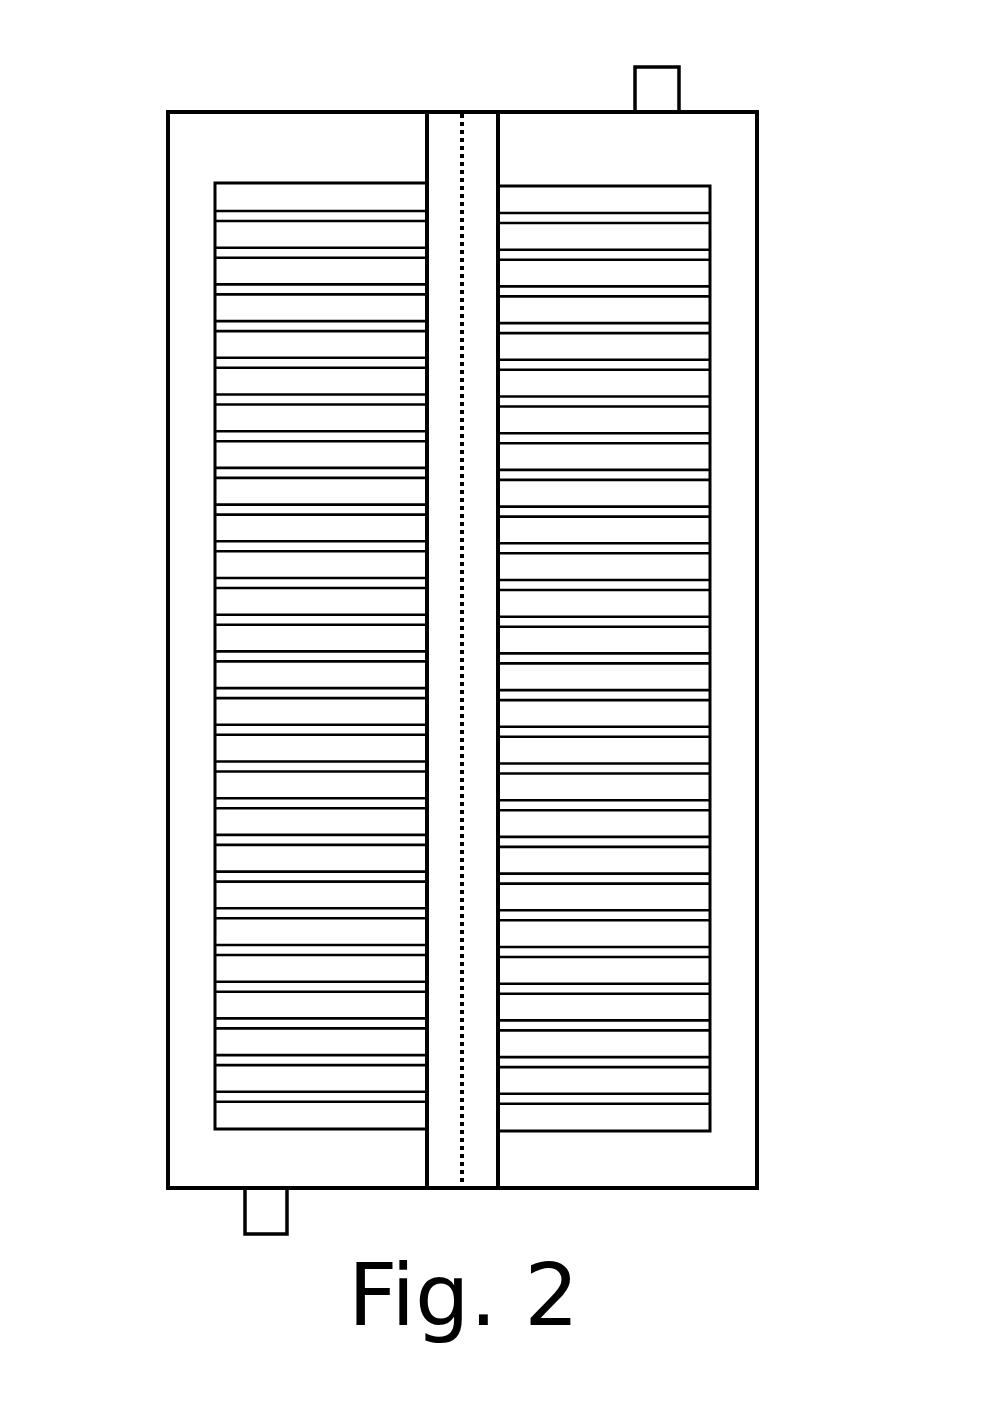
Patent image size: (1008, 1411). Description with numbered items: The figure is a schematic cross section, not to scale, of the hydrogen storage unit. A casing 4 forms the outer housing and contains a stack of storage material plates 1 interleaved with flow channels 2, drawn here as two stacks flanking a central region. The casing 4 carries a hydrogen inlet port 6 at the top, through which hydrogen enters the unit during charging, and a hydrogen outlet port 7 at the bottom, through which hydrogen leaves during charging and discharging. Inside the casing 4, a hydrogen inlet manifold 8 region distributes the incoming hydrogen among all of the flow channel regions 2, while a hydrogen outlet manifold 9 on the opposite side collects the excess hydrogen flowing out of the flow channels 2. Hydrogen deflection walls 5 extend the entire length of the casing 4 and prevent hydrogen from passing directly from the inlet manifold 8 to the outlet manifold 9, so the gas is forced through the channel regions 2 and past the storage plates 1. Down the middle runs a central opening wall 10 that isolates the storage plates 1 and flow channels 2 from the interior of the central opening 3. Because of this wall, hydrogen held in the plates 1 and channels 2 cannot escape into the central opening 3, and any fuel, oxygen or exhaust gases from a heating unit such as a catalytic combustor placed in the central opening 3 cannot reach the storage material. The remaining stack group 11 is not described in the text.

The storage material plates 1 is at (702, 202).
The flow channels 2 is at (702, 329).
The central opening 3 is at (438, 122).
The casing 4 is at (758, 467).
The hydrogen deflection walls 5 is at (464, 115).
The hydrogen inlet port 6 is at (672, 82).
The hydrogen outlet port 7 is at (257, 1220).
The hydrogen inlet manifold 8 is at (740, 574).
The hydrogen outlet manifold 9 is at (185, 563).
The central opening wall 10 is at (427, 149).
The left electrode stack 11 is at (321, 656).